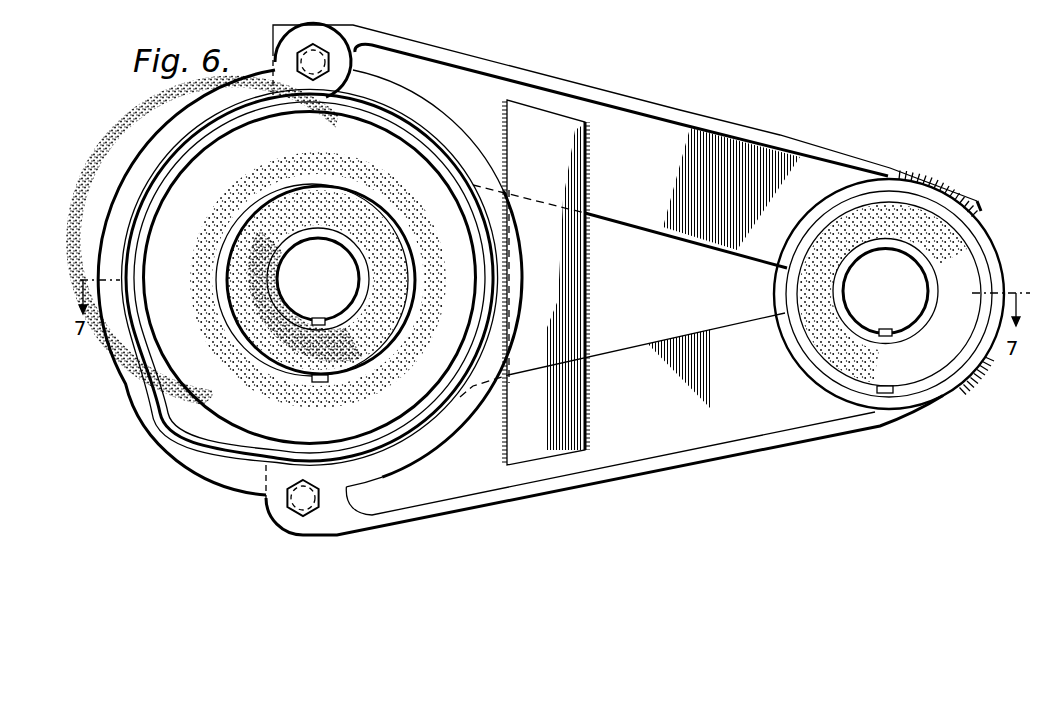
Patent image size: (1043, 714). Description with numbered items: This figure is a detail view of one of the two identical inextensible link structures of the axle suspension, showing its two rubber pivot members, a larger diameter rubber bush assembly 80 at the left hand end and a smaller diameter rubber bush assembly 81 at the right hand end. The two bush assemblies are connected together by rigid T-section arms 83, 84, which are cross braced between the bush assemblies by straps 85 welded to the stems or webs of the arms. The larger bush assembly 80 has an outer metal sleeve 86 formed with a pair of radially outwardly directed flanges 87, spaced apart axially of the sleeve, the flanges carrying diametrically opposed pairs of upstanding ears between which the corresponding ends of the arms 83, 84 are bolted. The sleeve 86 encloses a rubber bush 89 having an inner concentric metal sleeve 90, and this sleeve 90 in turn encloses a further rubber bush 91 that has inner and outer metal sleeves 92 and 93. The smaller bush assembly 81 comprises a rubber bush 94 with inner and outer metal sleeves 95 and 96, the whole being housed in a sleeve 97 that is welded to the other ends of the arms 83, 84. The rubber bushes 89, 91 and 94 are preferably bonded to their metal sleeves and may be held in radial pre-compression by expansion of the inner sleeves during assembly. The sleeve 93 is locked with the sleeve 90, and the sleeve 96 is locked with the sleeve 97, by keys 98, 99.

The rubber bush assembly 80 is at (404, 168).
The rubber bush assembly 81 is at (948, 246).
The T-section arm 83 is at (627, 126).
The T-section arm 84 is at (742, 430).
The strap 85 is at (560, 285).
The outer metal sleeve 86 is at (233, 431).
The flange 87 is at (180, 438).
The rubber bush 89 is at (228, 427).
The inner concentric metal sleeve 90 is at (222, 339).
The rubber bush 91 is at (264, 288).
The inner metal sleeve 92 is at (327, 236).
The outer metal sleeve 93 is at (234, 397).
The rubber bush 94 is at (808, 276).
The inner metal sleeve 95 is at (866, 305).
The outer metal sleeve 96 is at (829, 216).
The sleeve 97 is at (822, 372).
The key 98 is at (320, 382).
The key 99 is at (880, 393).